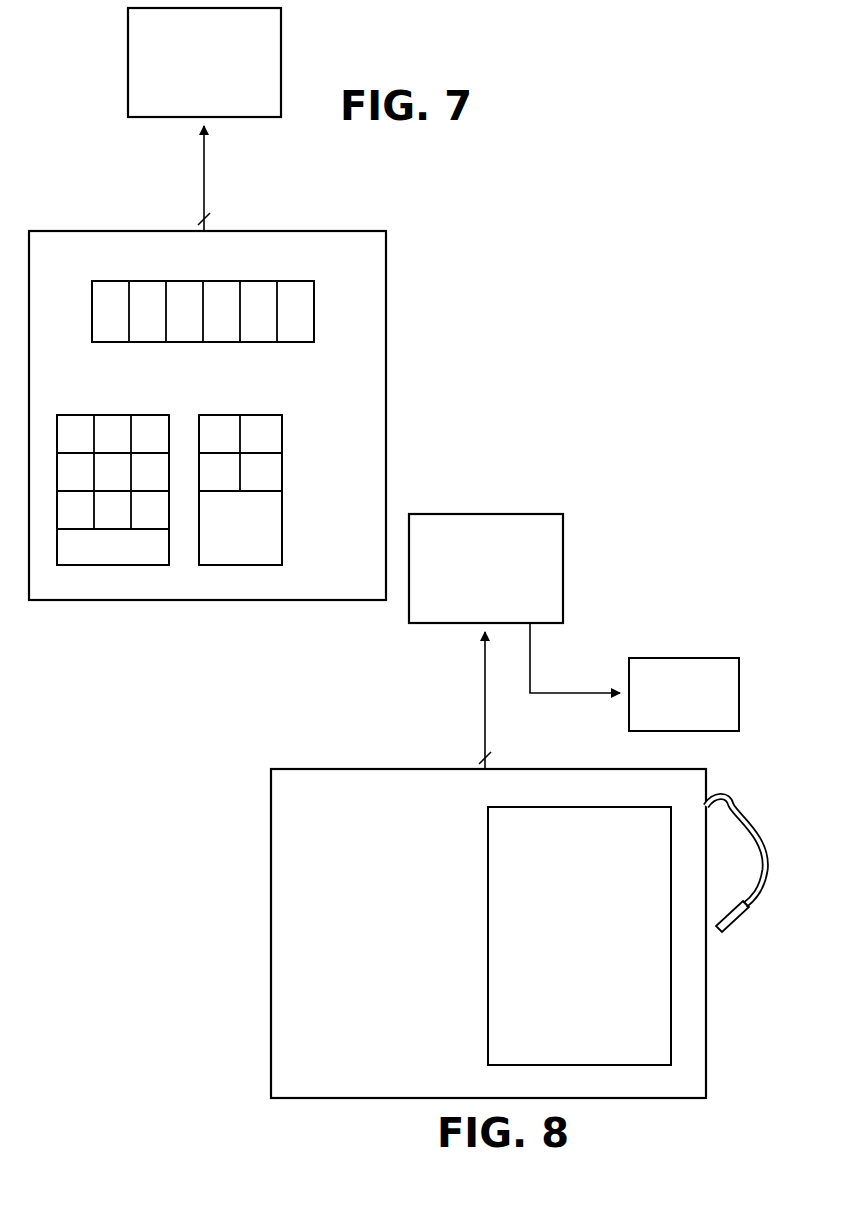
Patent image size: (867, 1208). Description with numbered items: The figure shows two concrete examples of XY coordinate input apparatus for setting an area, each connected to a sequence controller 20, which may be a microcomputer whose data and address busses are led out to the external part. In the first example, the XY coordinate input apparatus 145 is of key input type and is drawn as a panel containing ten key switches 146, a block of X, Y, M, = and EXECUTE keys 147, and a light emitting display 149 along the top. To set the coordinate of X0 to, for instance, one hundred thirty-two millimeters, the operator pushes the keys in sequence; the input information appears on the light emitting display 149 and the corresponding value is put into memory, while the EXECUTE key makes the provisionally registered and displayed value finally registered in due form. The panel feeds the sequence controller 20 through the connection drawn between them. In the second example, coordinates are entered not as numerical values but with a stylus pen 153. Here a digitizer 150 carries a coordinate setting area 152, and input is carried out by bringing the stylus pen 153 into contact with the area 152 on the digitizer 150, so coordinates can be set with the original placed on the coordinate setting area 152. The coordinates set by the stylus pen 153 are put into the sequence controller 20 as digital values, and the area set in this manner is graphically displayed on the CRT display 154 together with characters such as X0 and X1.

In FIG. 7, the sequence controller 20 is at (281, 28).
In FIG. 8, the sequence controller 20 is at (563, 550).
In FIG. 7, the XY coordinate input apparatus 145 is at (305, 229).
In FIG. 7, the ten key switches 146 is at (137, 415).
In FIG. 7, the X, Y, M, = and EXECUTE keys 147 is at (272, 415).
In FIG. 7, the light emitting display 149 is at (314, 302).
In FIG. 8, the digitizer 150 is at (325, 768).
In FIG. 8, the coordinate setting area 152 is at (487, 832).
In FIG. 8, the stylus pen 153 is at (738, 918).
In FIG. 8, the CRT display 154 is at (680, 658).